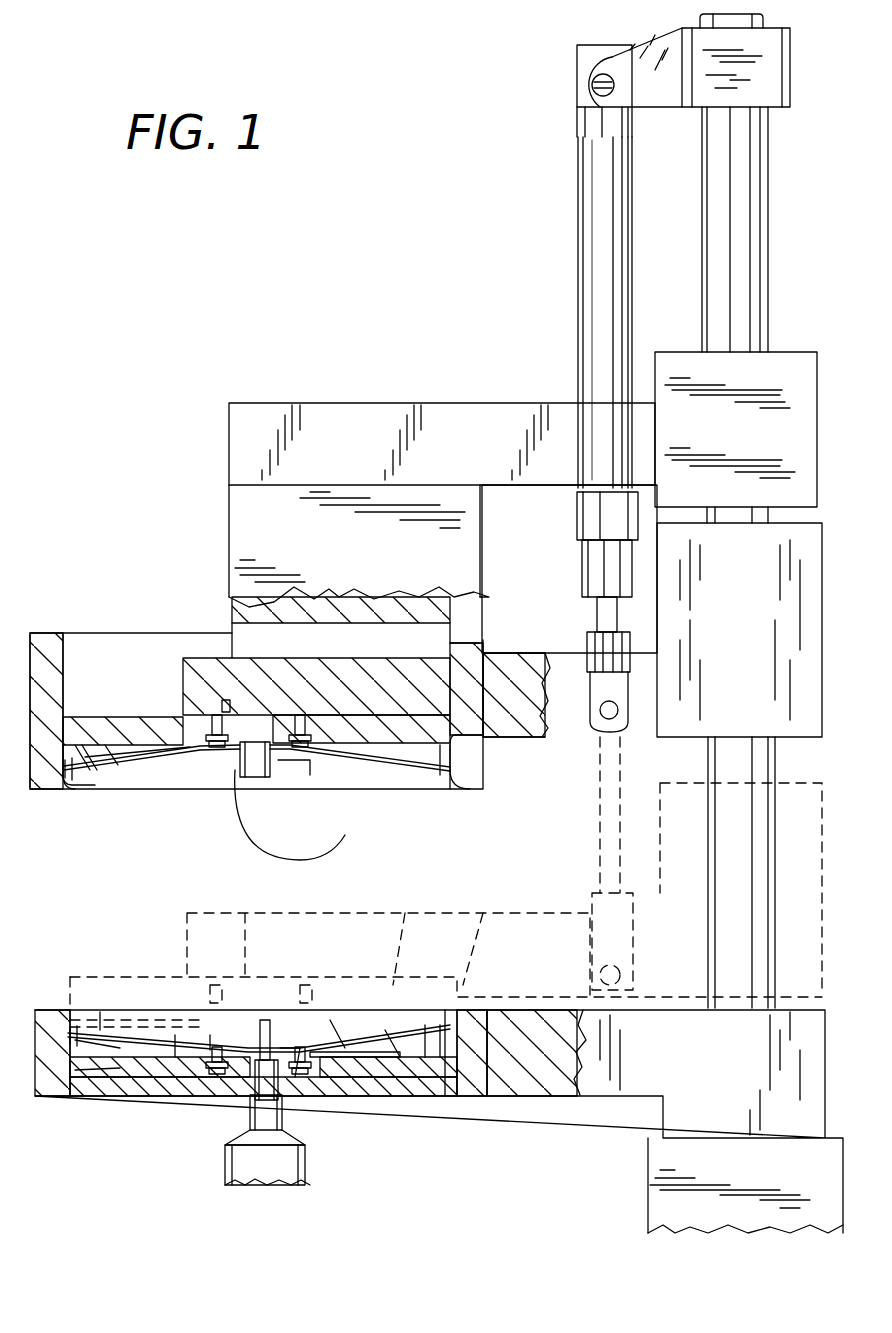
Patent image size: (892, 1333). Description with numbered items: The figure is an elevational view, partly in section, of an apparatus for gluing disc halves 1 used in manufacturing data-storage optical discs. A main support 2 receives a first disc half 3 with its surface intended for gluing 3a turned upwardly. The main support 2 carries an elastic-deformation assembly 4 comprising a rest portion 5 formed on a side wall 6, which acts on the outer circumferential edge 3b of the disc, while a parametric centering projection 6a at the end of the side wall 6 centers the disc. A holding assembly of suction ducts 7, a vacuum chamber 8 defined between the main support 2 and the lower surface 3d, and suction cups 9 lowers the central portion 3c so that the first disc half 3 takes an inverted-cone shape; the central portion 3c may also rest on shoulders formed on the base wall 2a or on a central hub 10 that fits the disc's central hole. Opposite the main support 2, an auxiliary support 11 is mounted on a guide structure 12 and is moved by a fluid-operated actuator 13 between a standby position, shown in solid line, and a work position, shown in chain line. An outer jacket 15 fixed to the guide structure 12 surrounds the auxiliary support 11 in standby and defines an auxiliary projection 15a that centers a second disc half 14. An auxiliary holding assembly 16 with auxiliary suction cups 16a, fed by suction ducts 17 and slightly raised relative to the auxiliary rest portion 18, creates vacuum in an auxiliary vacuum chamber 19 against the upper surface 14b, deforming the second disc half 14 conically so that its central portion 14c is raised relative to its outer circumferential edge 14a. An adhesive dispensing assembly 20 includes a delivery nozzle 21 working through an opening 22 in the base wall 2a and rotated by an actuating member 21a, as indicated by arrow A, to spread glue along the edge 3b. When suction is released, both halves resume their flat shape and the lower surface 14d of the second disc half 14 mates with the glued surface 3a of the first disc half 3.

The apparatus for gluing disc halves 1 is at (175, 354).
The main support 2 is at (482, 1096).
The base wall 2a is at (188, 1090).
The first disc half 3 is at (140, 1060).
The surface intended for gluing 3a is at (185, 1035).
The outer circumferential edge 3b is at (85, 1028).
The central portion 3c is at (213, 1032).
The lower surface 3d is at (392, 1055).
The elastic-deformation assembly 4 is at (145, 1047).
The rest portion 5 is at (430, 1042).
The side wall 6 is at (477, 1047).
The parametric centering projection 6a is at (112, 1015).
The suction ducts 7 is at (162, 1085).
The vacuum chamber 8 is at (400, 1062).
The suction cups 9 is at (225, 1080).
The central hub 10 is at (345, 1025).
The auxiliary support 11 is at (183, 652).
The guide structure 12 is at (770, 510).
The fluid-operated actuator 13 is at (583, 240).
The second disc half 14 is at (378, 758).
The outer circumferential edge 14a is at (445, 785).
The upper surface 14b is at (158, 740).
The central portion 14c is at (262, 790).
The lower surface 14d is at (190, 775).
The outer jacket 15 is at (42, 772).
The auxiliary projection 15a is at (55, 792).
The auxiliary holding assembly 16 is at (225, 712).
The auxiliary suction cups 16a is at (305, 775).
The suction ducts 17 is at (215, 700).
The auxiliary rest portion 18 is at (85, 735).
The auxiliary vacuum chamber 19 is at (112, 740).
The adhesive dispensing assembly 20 is at (300, 1040).
The delivery nozzle 21 is at (264, 1030).
The actuating member 21a is at (300, 1165).
The opening 22 is at (240, 1135).
The arrow A is at (284, 1112).